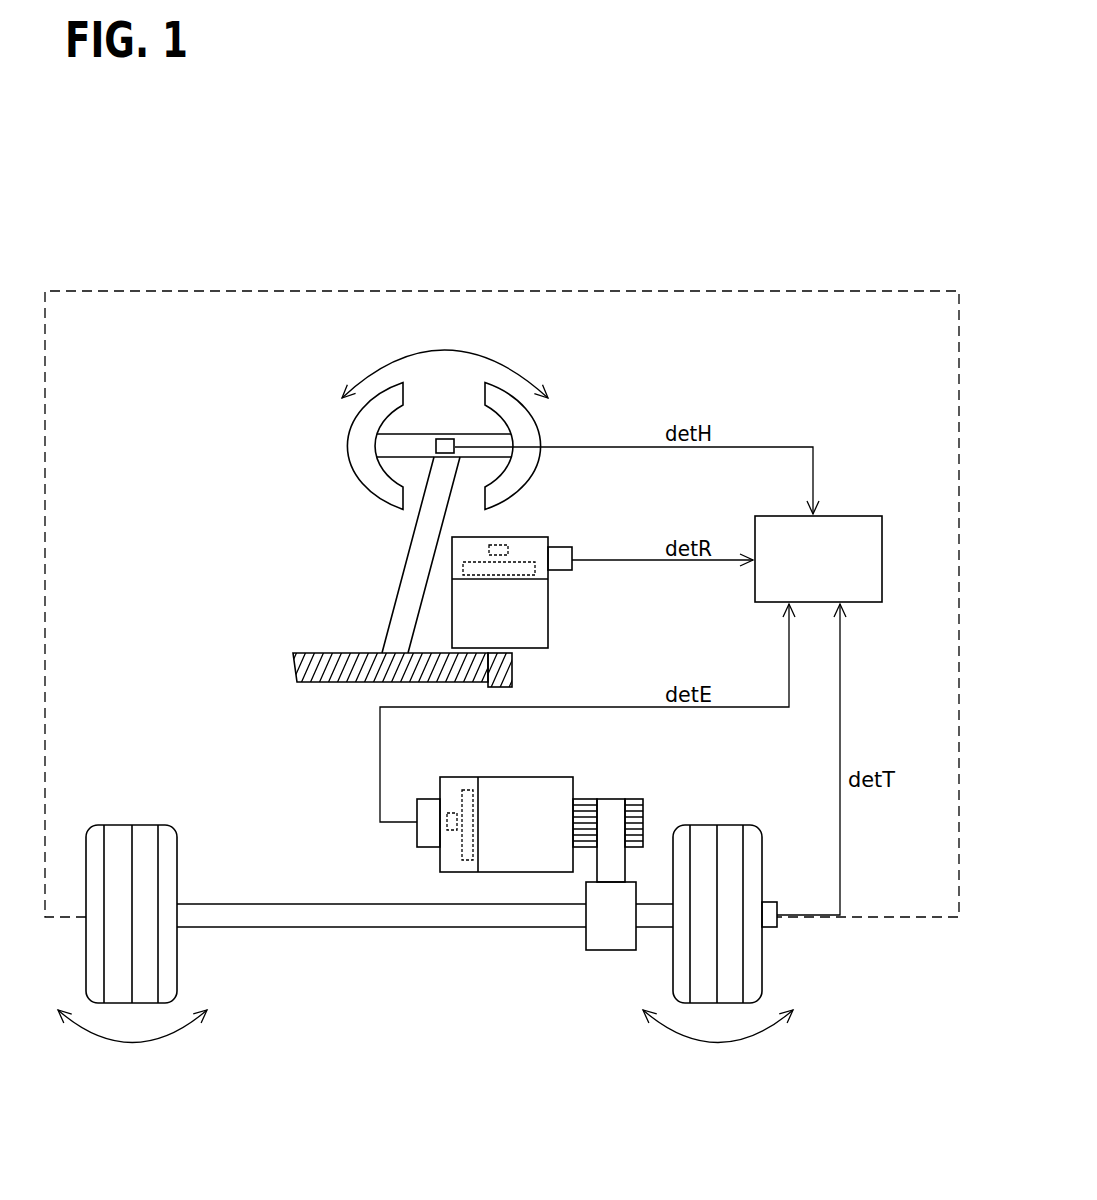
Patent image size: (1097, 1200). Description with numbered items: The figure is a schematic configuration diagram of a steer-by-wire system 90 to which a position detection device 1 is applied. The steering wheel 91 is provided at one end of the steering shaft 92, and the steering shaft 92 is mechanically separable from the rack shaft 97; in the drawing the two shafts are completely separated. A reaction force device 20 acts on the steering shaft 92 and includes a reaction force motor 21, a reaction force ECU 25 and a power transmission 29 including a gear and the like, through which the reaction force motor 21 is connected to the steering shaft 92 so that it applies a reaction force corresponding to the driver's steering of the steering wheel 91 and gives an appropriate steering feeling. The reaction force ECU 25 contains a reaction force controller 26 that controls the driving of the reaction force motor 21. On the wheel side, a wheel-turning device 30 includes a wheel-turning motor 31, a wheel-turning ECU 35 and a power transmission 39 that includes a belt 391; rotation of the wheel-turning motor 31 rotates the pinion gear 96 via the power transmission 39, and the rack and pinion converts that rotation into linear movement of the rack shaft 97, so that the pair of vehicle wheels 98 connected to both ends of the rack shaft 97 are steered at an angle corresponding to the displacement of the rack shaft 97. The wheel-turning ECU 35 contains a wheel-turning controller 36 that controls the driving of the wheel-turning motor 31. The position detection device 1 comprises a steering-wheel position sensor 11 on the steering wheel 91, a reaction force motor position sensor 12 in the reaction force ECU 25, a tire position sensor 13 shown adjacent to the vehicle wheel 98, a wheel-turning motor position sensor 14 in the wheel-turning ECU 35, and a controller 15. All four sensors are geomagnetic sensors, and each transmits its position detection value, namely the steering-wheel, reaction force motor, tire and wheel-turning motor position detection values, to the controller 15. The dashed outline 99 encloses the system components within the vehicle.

The position detection device 1 is at (851, 441).
The steering-wheel position sensor 11 is at (445, 437).
The reaction force motor position sensor 12 is at (498, 537).
The tire position sensor 13 is at (773, 900).
The wheel-turning motor position sensor 14 is at (441, 849).
The controller 15 is at (882, 531).
The reaction force device 20 is at (562, 613).
The reaction force motor 21 is at (528, 632).
The reaction force ECU 25 is at (546, 544).
The reaction force controller 26 is at (536, 568).
The power transmission 29 is at (512, 670).
The wheel-turning device 30 is at (402, 838).
The wheel-turning motor 31 is at (512, 787).
The wheel-turning ECU 35 is at (447, 787).
The wheel-turning controller 36 is at (467, 790).
The power transmission 39 is at (636, 805).
The belt 391 is at (608, 805).
The steer-by-wire system 90 is at (297, 1105).
The steering wheel 91 is at (522, 428).
The steering shaft 92 is at (405, 597).
The pinion gear 96 is at (604, 951).
The rack shaft 97 is at (443, 928).
The vehicle wheel 98 is at (128, 825).
The vehicle 99 is at (109, 290).